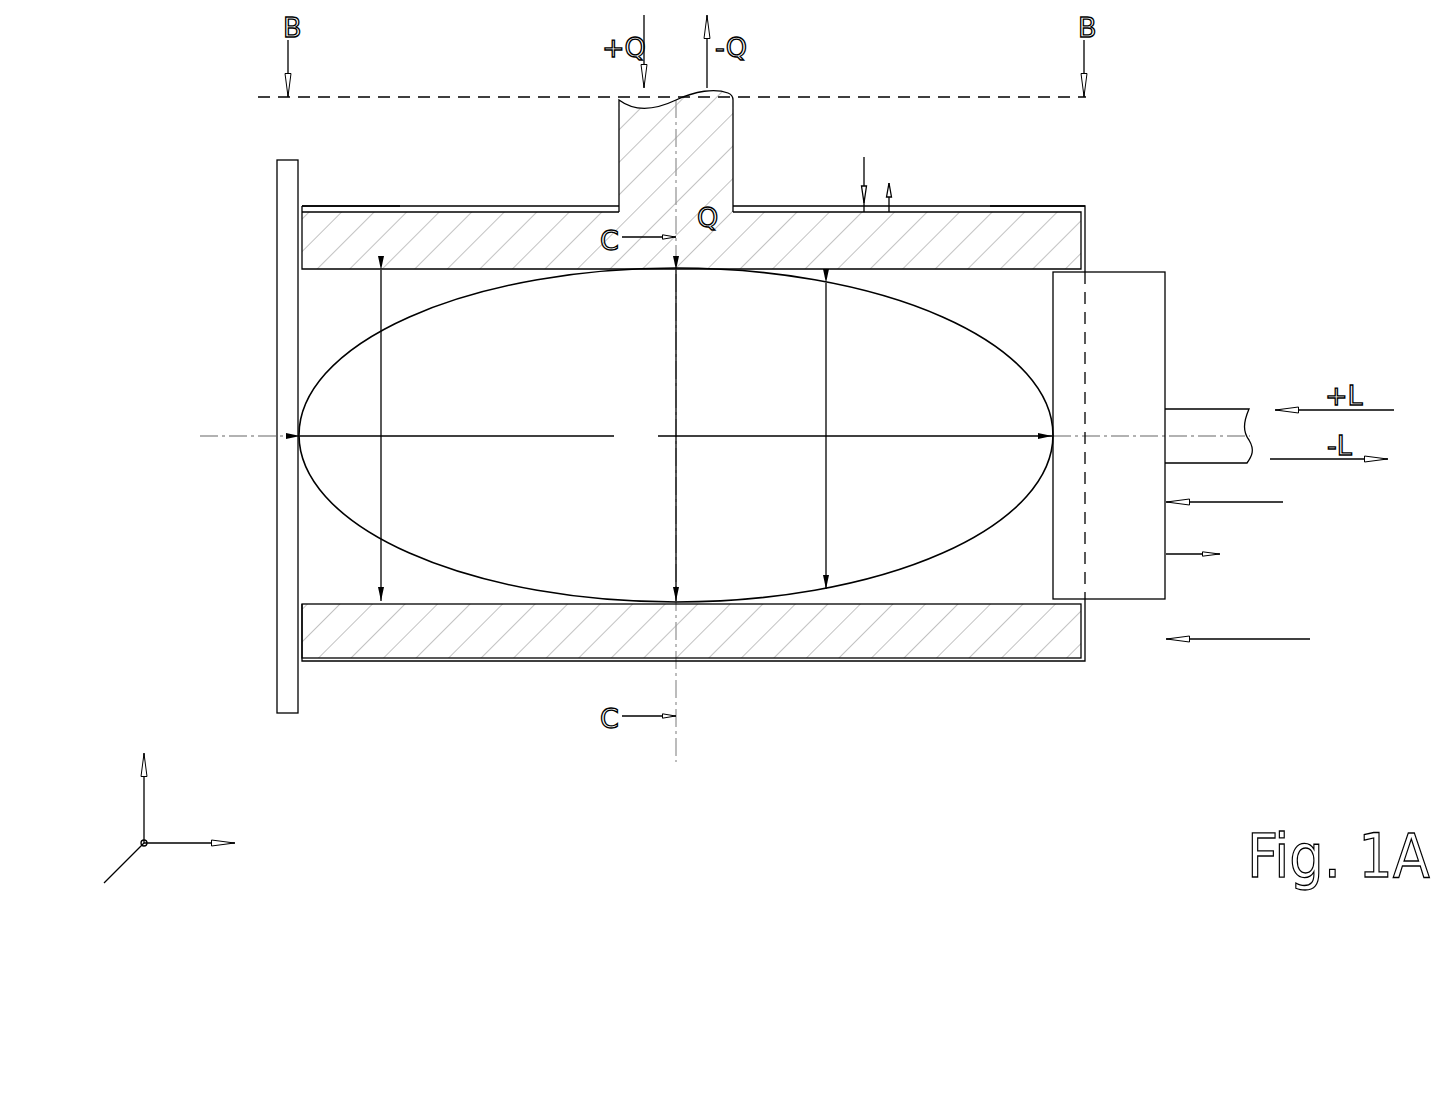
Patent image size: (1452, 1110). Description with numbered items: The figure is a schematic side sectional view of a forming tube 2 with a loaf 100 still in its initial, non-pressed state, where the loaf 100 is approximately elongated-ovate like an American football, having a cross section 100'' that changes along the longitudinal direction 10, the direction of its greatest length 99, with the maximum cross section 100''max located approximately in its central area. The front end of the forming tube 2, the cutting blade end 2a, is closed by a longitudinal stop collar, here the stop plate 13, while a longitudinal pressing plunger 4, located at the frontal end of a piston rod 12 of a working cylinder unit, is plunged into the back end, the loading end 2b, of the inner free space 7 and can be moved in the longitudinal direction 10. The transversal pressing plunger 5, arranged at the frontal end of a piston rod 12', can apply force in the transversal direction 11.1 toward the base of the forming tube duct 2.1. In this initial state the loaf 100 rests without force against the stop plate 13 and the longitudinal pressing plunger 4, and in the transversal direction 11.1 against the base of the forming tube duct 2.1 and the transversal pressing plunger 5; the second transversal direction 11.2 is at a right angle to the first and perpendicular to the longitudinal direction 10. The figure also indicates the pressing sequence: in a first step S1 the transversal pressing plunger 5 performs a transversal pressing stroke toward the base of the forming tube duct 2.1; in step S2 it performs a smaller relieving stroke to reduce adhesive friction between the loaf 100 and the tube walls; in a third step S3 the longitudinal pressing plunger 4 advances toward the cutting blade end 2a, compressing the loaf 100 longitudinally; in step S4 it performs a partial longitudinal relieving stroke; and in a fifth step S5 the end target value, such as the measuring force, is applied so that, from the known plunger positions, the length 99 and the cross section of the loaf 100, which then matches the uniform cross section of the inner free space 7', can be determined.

The forming tube 2 is at (383, 700).
The cutting blade end 2a is at (318, 192).
The loading end 2b is at (1070, 197).
The forming tube duct 2.1 is at (1087, 235).
The longitudinal pressing plunger 4 is at (1140, 272).
The transversal pressing plunger 5 is at (450, 218).
The inner free space 7 is at (676, 435).
The inner free space 7' is at (383, 435).
The longitudinal direction 10 is at (180, 842).
The transversal direction 11.1 is at (143, 810).
The transversal direction 11.2 is at (108, 879).
The piston rod 12 is at (1208, 436).
The piston rod 12' is at (717, 151).
The stop plate 13 is at (276, 582).
The length 99 is at (676, 440).
The loaf 100 is at (749, 349).
The cross section 100'' is at (875, 436).
The maximum cross section 100''max is at (740, 435).
The first step S1 is at (864, 178).
The step S2 is at (891, 197).
The third step S3 is at (1224, 487).
The step S4 is at (1193, 570).
The fifth step S5 is at (1238, 655).